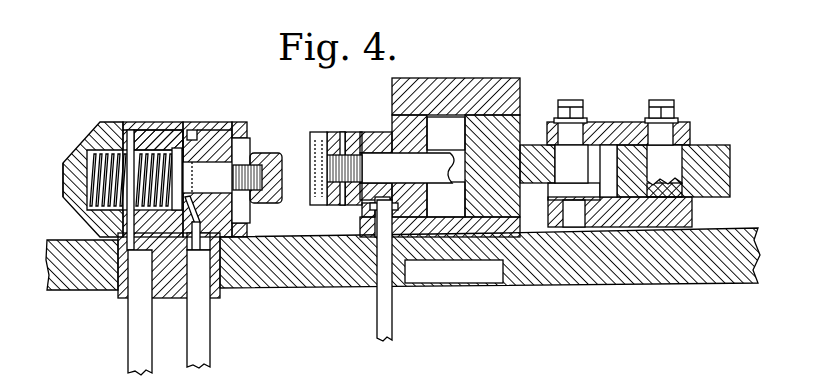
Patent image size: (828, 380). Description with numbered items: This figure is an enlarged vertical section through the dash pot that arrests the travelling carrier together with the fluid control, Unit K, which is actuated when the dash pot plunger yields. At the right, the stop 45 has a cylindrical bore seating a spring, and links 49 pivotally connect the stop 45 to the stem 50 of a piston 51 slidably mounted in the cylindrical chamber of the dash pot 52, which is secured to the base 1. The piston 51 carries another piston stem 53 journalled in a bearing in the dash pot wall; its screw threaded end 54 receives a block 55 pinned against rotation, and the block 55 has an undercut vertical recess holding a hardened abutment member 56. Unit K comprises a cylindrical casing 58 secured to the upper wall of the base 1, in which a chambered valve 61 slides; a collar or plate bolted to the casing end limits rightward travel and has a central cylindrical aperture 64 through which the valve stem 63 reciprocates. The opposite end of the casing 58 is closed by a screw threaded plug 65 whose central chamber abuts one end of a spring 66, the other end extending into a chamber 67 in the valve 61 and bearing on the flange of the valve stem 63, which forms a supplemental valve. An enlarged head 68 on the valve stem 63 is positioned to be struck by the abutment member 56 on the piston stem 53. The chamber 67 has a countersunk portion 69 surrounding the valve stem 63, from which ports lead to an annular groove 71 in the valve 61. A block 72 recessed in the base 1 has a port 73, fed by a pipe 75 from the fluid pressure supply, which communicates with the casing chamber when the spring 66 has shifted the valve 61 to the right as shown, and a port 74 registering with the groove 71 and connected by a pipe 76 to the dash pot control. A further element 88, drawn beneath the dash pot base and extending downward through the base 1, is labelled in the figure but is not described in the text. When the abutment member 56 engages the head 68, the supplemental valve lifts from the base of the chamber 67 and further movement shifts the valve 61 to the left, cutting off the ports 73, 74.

The base 1 is at (655, 285).
The Unit K is at (153, 164).
The stop 45 is at (717, 145).
The links 49 is at (625, 123).
The stem 50 is at (533, 143).
The piston 51 is at (525, 127).
The dash pot 52 is at (470, 78).
The piston stem 53 is at (392, 157).
The screw threaded end 54 is at (352, 132).
The block 55 is at (335, 132).
The abutment member 56 is at (310, 137).
The casing 58 is at (213, 127).
The valve 61 is at (230, 120).
The valve stem 63 is at (222, 168).
The central cylindrical aperture 64 is at (243, 217).
The screw threaded plug 65 is at (63, 170).
The spring 66 is at (90, 138).
The chamber 67 is at (140, 143).
The head 68 is at (258, 158).
The countersunk portion 69 is at (183, 135).
The annular groove 71 is at (197, 132).
The block 72 is at (118, 297).
The port 73 is at (72, 240).
The port 74 is at (213, 250).
The pipe 75 is at (133, 355).
The pipe 76 is at (205, 345).
The plunger 88 is at (387, 318).